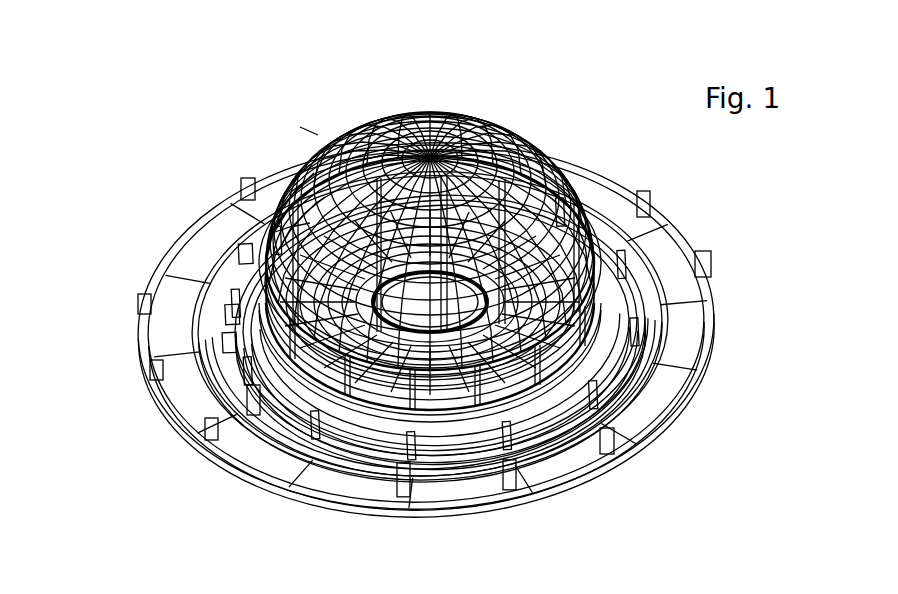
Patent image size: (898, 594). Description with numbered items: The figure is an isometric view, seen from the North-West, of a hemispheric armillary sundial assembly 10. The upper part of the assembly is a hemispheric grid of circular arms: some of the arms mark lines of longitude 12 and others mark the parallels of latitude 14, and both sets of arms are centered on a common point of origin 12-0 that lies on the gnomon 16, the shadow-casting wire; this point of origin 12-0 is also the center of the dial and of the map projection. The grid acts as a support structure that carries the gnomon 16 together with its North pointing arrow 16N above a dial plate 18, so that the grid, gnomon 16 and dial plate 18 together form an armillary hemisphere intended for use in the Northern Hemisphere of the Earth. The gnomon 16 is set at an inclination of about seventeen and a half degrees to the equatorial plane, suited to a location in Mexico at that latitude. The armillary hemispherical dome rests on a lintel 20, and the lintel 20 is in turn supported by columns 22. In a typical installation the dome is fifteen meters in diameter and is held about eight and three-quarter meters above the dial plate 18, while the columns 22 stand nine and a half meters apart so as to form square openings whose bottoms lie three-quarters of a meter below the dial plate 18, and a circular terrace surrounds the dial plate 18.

The sundial assembly 10 is at (310, 130).
The circular arms marking lines of longitude 12 is at (503, 157).
The common point of origin 12-0 is at (448, 400).
The parallels of latitude 14 is at (282, 238).
The gnomon 16 is at (305, 425).
The North pointing arrow 16N is at (230, 327).
The dial plate 18 is at (545, 410).
The lintel 20 is at (648, 325).
The columns 22 is at (660, 418).